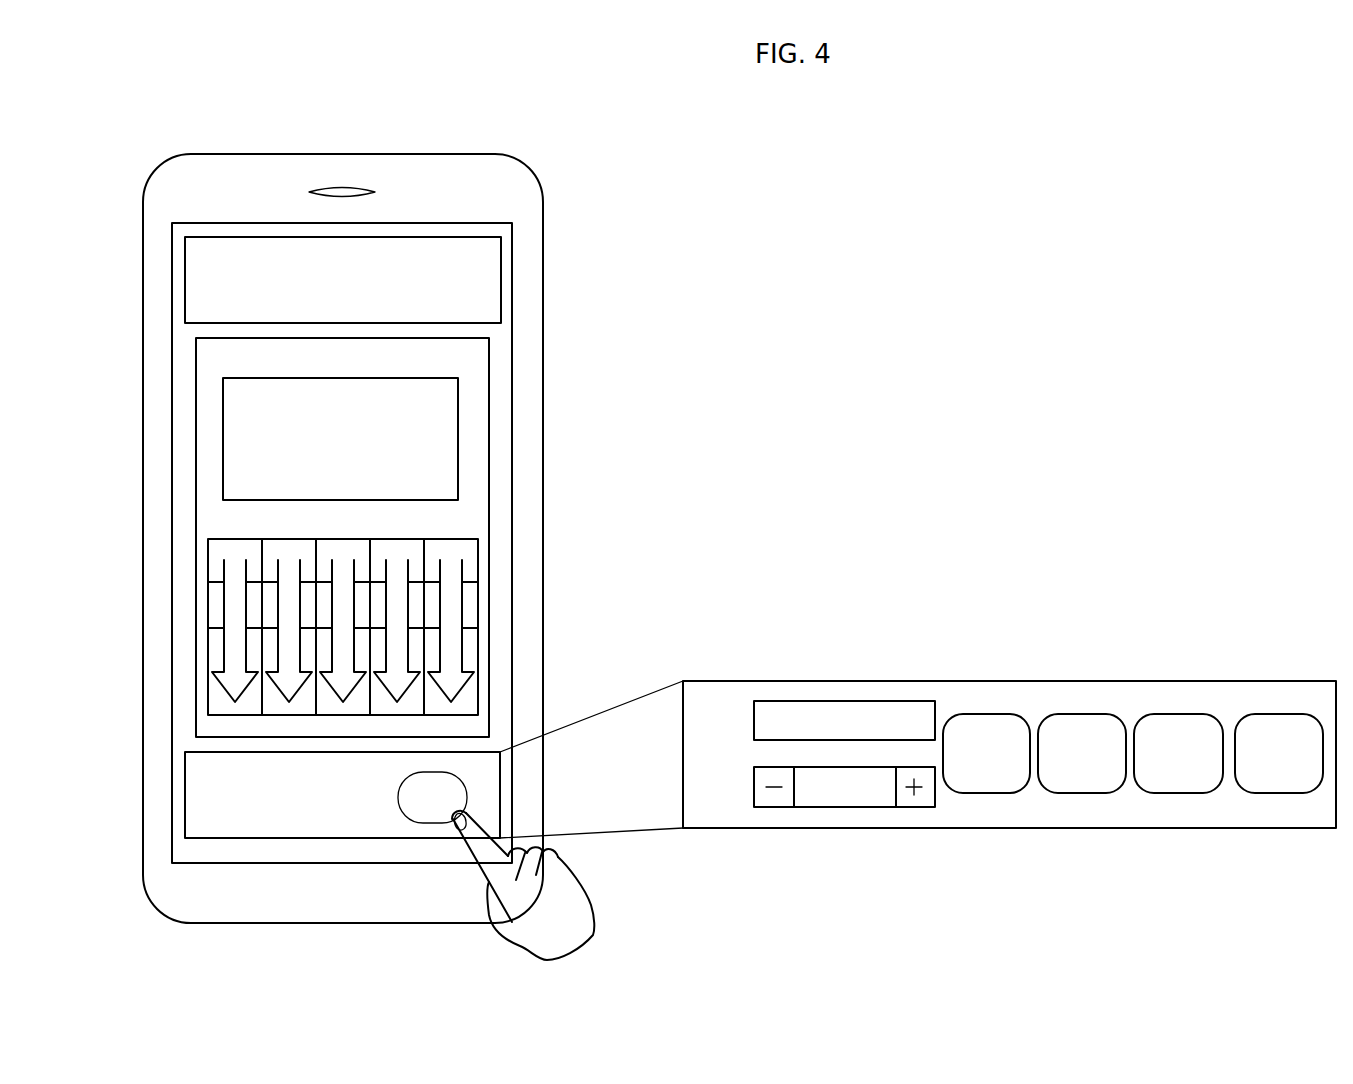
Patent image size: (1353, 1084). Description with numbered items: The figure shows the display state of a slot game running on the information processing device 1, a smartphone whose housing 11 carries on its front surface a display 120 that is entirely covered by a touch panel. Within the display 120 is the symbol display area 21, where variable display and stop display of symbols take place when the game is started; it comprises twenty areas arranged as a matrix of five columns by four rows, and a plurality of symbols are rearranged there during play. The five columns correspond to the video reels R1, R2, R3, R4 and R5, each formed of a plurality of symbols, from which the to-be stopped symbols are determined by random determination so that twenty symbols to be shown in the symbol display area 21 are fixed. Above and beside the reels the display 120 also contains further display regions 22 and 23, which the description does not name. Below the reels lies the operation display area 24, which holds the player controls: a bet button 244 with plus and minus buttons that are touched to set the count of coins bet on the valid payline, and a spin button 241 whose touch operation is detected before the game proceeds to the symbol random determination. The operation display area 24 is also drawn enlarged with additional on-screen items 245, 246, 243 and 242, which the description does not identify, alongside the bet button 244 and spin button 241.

The information processing device 1 is at (560, 158).
The housing 11 is at (433, 154).
The display 120 is at (513, 332).
The information display area 22 is at (501, 268).
The character display area 23 is at (490, 442).
The symbol display area 21 is at (478, 557).
The video reel R1 is at (203, 548).
The video reel R2 is at (272, 543).
The video reel R3 is at (338, 544).
The video reel R4 is at (418, 540).
The video reel R5 is at (478, 646).
The operation display area 24 is at (497, 750).
The win display 245 is at (825, 701).
The bet button 244 is at (847, 807).
The shop button 246 is at (1002, 793).
The item button 243 is at (1088, 793).
The auto button 242 is at (1188, 793).
The spin button 241 is at (1302, 793).